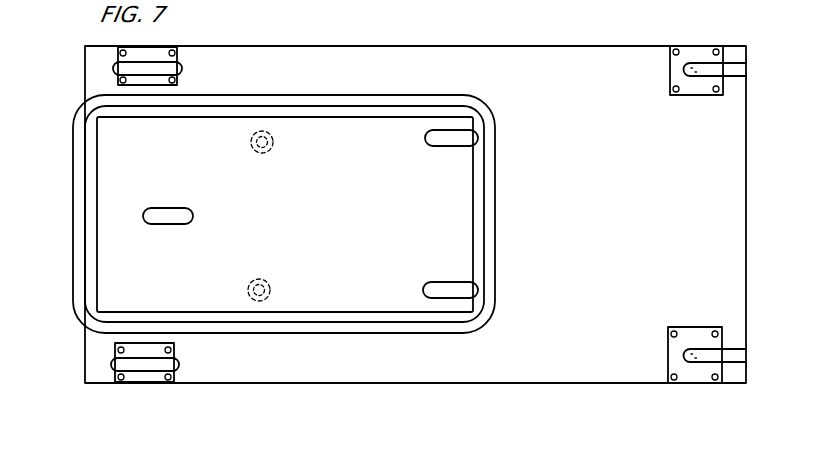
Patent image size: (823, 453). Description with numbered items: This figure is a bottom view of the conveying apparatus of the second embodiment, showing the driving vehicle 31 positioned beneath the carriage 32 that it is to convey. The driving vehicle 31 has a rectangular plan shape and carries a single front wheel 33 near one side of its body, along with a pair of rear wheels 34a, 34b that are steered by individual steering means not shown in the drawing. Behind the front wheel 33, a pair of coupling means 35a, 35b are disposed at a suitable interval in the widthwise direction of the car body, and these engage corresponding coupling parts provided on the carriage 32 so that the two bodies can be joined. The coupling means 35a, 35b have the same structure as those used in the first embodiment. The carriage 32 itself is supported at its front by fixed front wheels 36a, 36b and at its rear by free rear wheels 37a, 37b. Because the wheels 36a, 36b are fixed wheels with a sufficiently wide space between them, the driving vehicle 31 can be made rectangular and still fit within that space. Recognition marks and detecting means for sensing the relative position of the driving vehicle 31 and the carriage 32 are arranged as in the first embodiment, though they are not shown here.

The driving vehicle 31 is at (288, 335).
The carriage 32 is at (225, 384).
The front wheel 33 is at (146, 219).
The rear wheel 34a is at (427, 138).
The rear wheel 34b is at (437, 292).
The coupling means 35a is at (266, 151).
The coupling means 35b is at (271, 285).
The fixed front wheel 36a is at (183, 66).
The fixed front wheel 36b is at (180, 364).
The free rear wheel 37a is at (705, 80).
The free rear wheel 37b is at (700, 366).